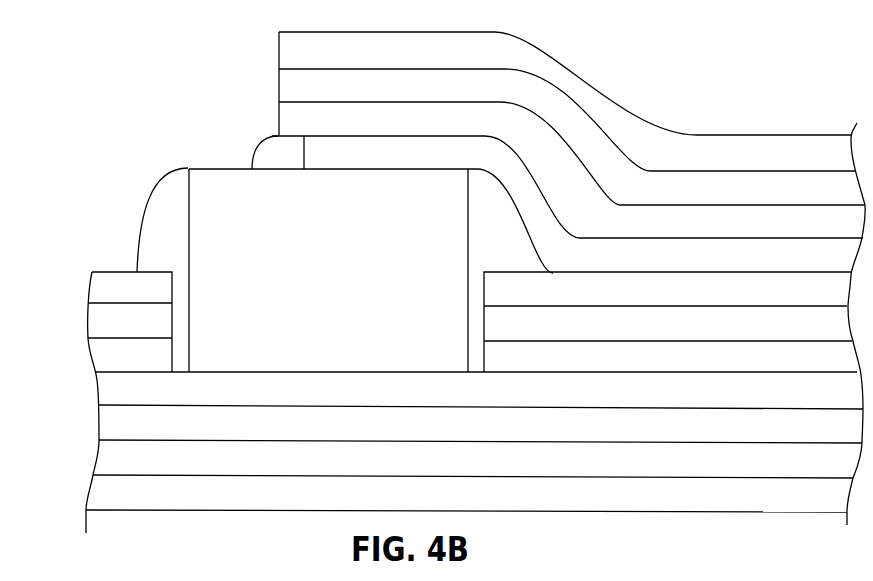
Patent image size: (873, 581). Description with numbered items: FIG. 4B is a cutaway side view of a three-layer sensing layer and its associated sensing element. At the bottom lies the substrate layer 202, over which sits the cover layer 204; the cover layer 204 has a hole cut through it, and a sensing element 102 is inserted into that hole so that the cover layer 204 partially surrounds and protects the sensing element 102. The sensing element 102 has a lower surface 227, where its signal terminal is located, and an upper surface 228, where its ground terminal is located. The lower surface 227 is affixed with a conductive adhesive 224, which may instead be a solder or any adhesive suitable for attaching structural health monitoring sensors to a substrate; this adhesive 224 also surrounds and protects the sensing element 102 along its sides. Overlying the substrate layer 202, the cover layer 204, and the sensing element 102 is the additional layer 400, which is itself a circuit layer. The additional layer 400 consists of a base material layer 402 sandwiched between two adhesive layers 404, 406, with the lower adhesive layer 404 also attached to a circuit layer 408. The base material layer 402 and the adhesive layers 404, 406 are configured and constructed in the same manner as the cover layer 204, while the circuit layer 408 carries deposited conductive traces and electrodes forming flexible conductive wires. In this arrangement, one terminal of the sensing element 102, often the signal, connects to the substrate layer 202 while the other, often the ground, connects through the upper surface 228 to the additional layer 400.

The additional layer 400 is at (238, 23).
The adhesive layer 406 is at (565, 101).
The base material layer 402 is at (567, 136).
The adhesive layer 404 is at (572, 169).
The circuit layer 408 is at (567, 204).
The conductive adhesive 224 is at (324, 204).
The sensing element 102 is at (328, 270).
The upper surface 228 is at (372, 170).
The lower surface 227 is at (365, 371).
The cover layer 204 is at (97, 255).
The substrate layer 202 is at (77, 372).